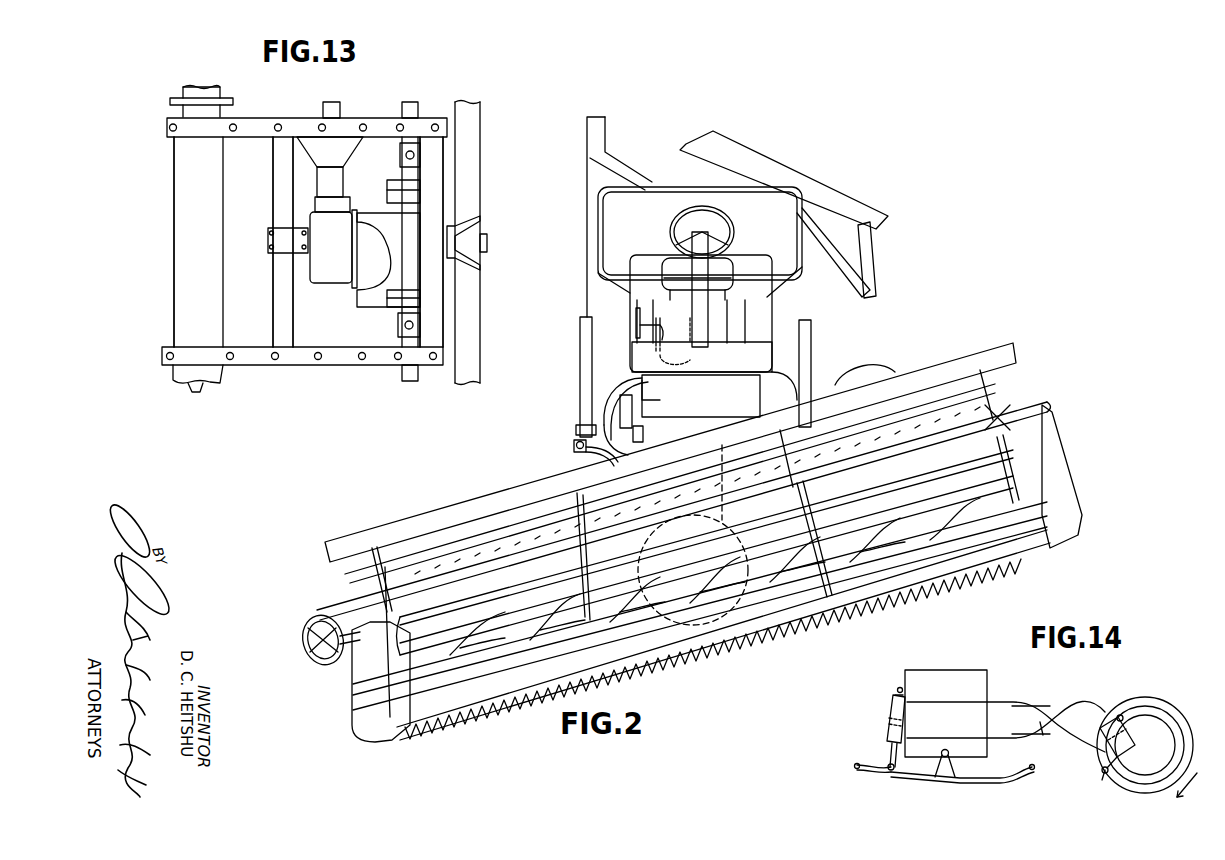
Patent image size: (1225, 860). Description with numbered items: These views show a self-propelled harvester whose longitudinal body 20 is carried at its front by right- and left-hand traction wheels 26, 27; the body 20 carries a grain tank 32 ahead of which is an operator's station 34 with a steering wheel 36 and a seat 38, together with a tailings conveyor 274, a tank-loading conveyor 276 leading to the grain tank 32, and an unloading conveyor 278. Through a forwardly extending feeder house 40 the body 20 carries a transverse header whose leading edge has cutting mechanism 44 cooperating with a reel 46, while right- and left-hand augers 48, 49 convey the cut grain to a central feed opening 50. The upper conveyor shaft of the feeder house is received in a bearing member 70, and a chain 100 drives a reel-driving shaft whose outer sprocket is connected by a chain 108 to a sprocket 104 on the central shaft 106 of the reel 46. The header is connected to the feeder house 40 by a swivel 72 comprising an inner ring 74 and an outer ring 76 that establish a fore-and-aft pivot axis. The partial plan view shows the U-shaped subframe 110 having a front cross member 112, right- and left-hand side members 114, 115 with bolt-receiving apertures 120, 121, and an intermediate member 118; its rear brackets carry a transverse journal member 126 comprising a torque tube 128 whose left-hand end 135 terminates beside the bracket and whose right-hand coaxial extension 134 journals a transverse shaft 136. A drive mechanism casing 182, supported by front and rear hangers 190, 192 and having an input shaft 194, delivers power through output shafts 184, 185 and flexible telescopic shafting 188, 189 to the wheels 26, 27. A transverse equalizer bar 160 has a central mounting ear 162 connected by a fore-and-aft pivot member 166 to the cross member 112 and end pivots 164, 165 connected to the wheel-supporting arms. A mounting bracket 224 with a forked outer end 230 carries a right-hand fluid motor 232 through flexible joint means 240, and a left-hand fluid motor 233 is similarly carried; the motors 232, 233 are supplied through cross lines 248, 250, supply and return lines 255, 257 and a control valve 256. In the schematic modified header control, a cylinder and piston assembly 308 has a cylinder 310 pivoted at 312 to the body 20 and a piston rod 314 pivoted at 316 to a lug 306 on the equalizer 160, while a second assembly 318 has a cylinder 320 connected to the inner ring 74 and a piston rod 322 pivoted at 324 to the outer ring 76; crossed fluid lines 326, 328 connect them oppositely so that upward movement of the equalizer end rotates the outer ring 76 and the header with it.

In FIG. 2, the longitudinal body 20 is at (711, 398).
In FIG. 14, the longitudinal body 20 is at (950, 668).
In FIG. 2, the right-hand traction wheel 26 is at (520, 485).
In FIG. 2, the left-hand traction wheel 27 is at (860, 380).
In FIG. 2, the grain tank 32 is at (660, 195).
In FIG. 2, the operator's station 34 is at (737, 368).
In FIG. 2, the steering wheel 36 is at (726, 225).
In FIG. 2, the seat 38 is at (735, 288).
In FIG. 2, the feeder house 40 is at (662, 418).
In FIG. 2, the transverse cutting mechanism 44 is at (706, 640).
In FIG. 2, the reel 46 is at (972, 358).
In FIG. 2, the right-hand auger 48 is at (520, 622).
In FIG. 2, the left-hand auger 49 is at (828, 528).
In FIG. 2, the central feed opening 50 is at (693, 570).
In FIG. 2, the right-hand bearing member 70 is at (645, 440).
In FIG. 2, the swivel or pivot 72 is at (722, 520).
In FIG. 14, the swivel or pivot 72 is at (1160, 697).
In FIG. 14, the inner ring 74 is at (1170, 718).
In FIG. 14, the outer ring 76 is at (1178, 735).
In FIG. 2, the chain 100 is at (625, 458).
In FIG. 2, the sprocket 104 is at (306, 646).
In FIG. 2, the central shaft of the reel 106 is at (366, 640).
In FIG. 2, the chain 108 is at (345, 612).
In FIG. 13, the subframe 110 is at (334, 375).
In FIG. 13, the transverse cross member or bight 112 is at (440, 317).
In FIG. 13, the right-hand longitudinal side member 114 is at (302, 378).
In FIG. 13, the left-hand longitudinal side member 115 is at (307, 108).
In FIG. 13, the transverse intermediate member 118 is at (281, 313).
In FIG. 13, the bolt-receiving apertures 120 is at (274, 360).
In FIG. 13, the bolt-receiving apertures 121 is at (399, 124).
In FIG. 13, the transverse journal member 126 is at (168, 247).
In FIG. 13, the torque tube 128 is at (174, 207).
In FIG. 13, the integral coaxial extension 134 is at (176, 378).
In FIG. 13, the left-hand end of the torque tube 135 is at (178, 116).
In FIG. 13, the transverse shaft 136 is at (190, 393).
In FIG. 13, the equalizer bar 160 is at (482, 187).
In FIG. 14, the equalizer bar 160 is at (922, 780).
In FIG. 13, the mounting ear 162 is at (482, 218).
In FIG. 14, the right-hand longitudinal pivot 164 is at (855, 770).
In FIG. 14, the left-hand longitudinal pivot 165 is at (1033, 772).
In FIG. 13, the fore-and-aft pivot member 166 is at (488, 241).
In FIG. 14, the fore-and-aft pivot member 166 is at (946, 758).
In FIG. 13, the drive mechanism casing 182 is at (373, 270).
In FIG. 13, the right-hand driving or output shaft 184 is at (400, 322).
In FIG. 13, the left-hand driving or output shaft 185 is at (400, 165).
In FIG. 13, the flexible and telescopic shafting 188 is at (410, 380).
In FIG. 13, the flexible and telescopic shaft 189 is at (410, 106).
In FIG. 13, the front hanger 190 is at (403, 290).
In FIG. 13, the rear hanger 192 is at (285, 250).
In FIG. 13, the input shaft 194 is at (333, 102).
In FIG. 2, the right-hand mounting bracket 224 is at (586, 458).
In FIG. 2, the bifurcated or forked outer end 230 is at (576, 430).
In FIG. 2, the right-hand fluid motor 232 is at (578, 356).
In FIG. 2, the left-hand fluid motor 233 is at (815, 345).
In FIG. 2, the flexible joint means 240 is at (570, 445).
In FIG. 2, the cross line 248 is at (606, 382).
In FIG. 2, the cross line 250 is at (612, 395).
In FIG. 2, the supply and return line 255 is at (648, 343).
In FIG. 2, the control valve 256 is at (636, 330).
In FIG. 2, the supply and return line 257 is at (692, 342).
In FIG. 2, the tailings conveyor 274 is at (620, 408).
In FIG. 2, the tank-loading conveyor 276 is at (587, 262).
In FIG. 2, the unloading conveyor 278 is at (876, 296).
In FIG. 14, the upstanding ear or lug 306 is at (870, 768).
In FIG. 14, the hydraulic cylinder and piston assembly 308 is at (885, 715).
In FIG. 14, the cylinder 310 is at (893, 695).
In FIG. 14, the pivotal connection 312 is at (898, 687).
In FIG. 14, the piston rod 314 is at (890, 750).
In FIG. 14, the pivotal connection 316 is at (889, 772).
In FIG. 14, the second cylinder and piston assembly 318 is at (1117, 713).
In FIG. 14, the cylinder 320 is at (1125, 736).
In FIG. 14, the piston rod 322 is at (1112, 766).
In FIG. 14, the pivotal connection 324 is at (1104, 778).
In FIG. 14, the crossed fluid line 326 is at (1015, 702).
In FIG. 14, the crossed fluid line 328 is at (1043, 735).